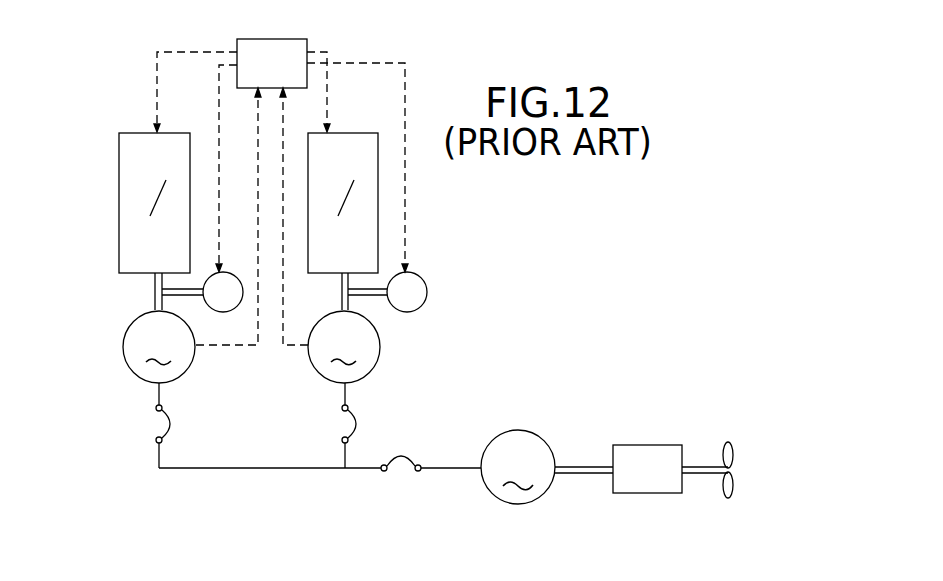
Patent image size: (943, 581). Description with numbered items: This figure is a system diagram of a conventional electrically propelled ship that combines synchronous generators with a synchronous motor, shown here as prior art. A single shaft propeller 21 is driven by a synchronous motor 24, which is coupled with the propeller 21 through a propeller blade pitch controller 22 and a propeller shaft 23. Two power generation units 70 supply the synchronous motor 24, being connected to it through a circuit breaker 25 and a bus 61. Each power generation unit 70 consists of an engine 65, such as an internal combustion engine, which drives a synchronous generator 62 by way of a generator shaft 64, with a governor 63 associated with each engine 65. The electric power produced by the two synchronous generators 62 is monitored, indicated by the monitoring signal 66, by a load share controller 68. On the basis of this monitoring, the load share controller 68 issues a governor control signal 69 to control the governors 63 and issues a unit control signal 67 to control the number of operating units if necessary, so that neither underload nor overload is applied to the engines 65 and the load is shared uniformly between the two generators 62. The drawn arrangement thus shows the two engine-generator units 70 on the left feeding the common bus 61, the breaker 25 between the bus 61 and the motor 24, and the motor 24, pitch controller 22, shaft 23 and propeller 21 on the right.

The single shaft propeller 21 is at (725, 448).
The propeller blade pitch controller 22 is at (640, 445).
The propeller shaft 23 is at (585, 465).
The synchronous motor 24 is at (517, 430).
The circuit breaker 25 is at (402, 451).
The bus 61 is at (216, 468).
The synchronous generator 62 is at (123, 347).
The governor 63 is at (232, 275).
The generator shaft 64 is at (155, 285).
The engine 65 is at (128, 133).
The monitoring signal 66 is at (222, 346).
The unit number control signal 67 is at (157, 52).
The load share controller 68 is at (272, 39).
The governor control signal 69 is at (219, 98).
The power generation unit 70 is at (130, 306).